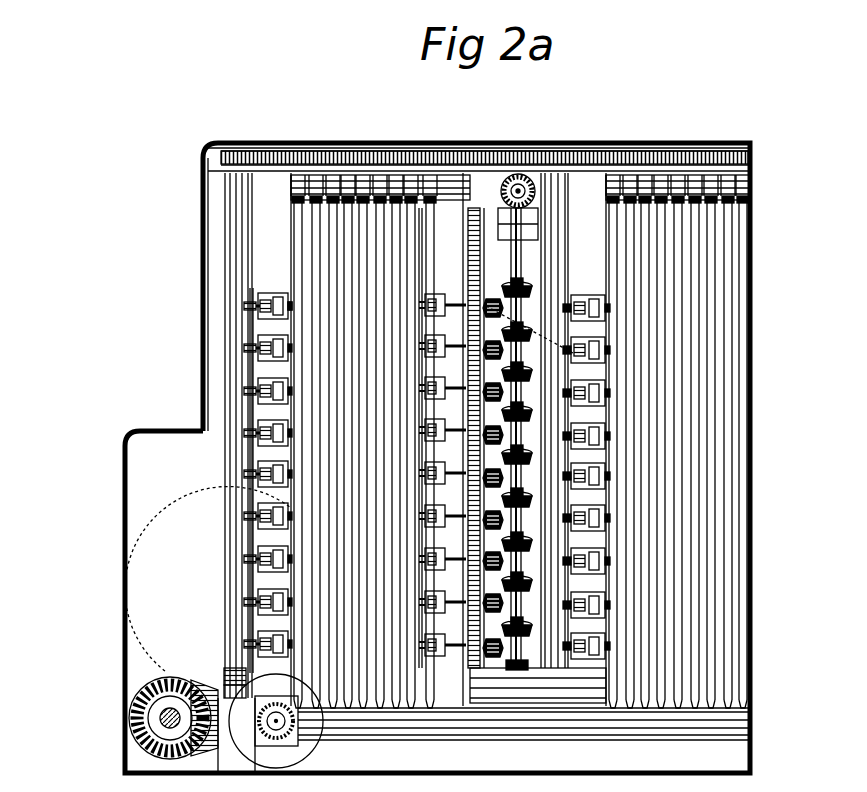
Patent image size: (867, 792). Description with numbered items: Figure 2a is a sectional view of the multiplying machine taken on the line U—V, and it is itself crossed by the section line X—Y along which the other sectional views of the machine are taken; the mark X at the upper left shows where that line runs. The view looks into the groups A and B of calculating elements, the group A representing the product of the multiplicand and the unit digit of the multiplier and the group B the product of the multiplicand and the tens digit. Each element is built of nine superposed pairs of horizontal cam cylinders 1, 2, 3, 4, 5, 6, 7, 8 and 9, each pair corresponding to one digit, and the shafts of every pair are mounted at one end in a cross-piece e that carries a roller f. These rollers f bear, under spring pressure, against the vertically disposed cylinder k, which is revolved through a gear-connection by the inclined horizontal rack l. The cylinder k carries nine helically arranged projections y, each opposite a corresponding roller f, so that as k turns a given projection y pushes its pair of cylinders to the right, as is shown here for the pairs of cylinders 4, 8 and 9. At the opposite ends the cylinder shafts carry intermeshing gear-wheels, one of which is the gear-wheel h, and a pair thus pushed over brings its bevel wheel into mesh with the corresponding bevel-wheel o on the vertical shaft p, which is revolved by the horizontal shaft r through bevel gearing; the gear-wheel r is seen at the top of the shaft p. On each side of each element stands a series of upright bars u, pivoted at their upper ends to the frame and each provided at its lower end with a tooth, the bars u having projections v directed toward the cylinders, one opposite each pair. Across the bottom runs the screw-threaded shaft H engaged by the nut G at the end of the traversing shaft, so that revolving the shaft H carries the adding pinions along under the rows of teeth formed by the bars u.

The section line X—Y X is at (178, 135).
The cylinder k is at (228, 207).
The group A is at (272, 439).
The group B is at (589, 439).
The upright bars u is at (402, 698).
The roller f is at (246, 298).
The cross-piece e is at (441, 287).
The cams or projections y is at (243, 428).
The projections v is at (462, 606).
The gear-wheel h is at (470, 282).
The pair of cylinders 1 is at (448, 266).
The pair of cylinders 2 is at (448, 330).
The pair of cylinders 3 is at (448, 372).
The pair of cylinders 4 is at (448, 413).
The pair of cylinders 5 is at (448, 457).
The pair of cylinders 6 is at (448, 500).
The pair of cylinders 7 is at (449, 542).
The pair of cylinders 8 is at (448, 583).
The pair of cylinders 9 is at (448, 662).
The vertical shaft p is at (505, 262).
The bevel-wheel o is at (522, 449).
The horizontal rack l is at (493, 478).
The horizontal shaft r is at (515, 167).
The screw-threaded shaft H is at (527, 724).
The nut G is at (305, 712).